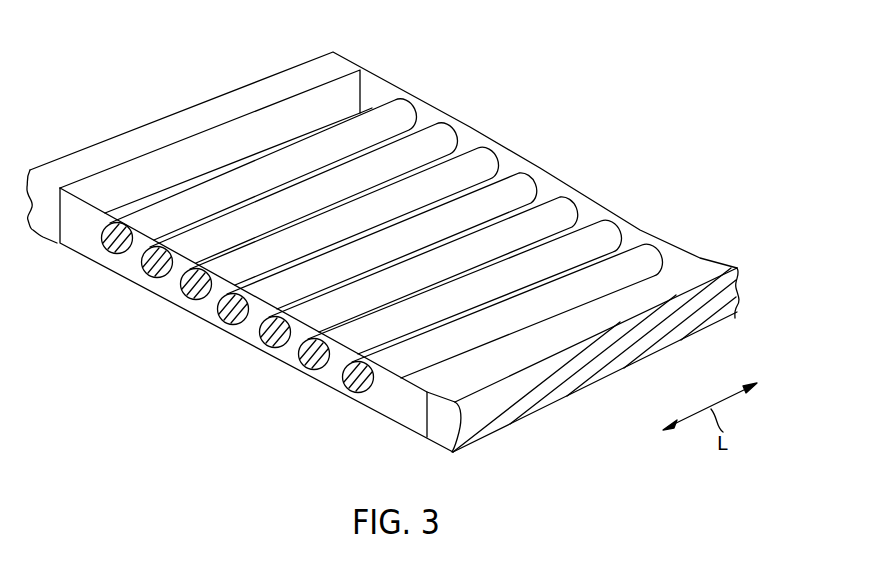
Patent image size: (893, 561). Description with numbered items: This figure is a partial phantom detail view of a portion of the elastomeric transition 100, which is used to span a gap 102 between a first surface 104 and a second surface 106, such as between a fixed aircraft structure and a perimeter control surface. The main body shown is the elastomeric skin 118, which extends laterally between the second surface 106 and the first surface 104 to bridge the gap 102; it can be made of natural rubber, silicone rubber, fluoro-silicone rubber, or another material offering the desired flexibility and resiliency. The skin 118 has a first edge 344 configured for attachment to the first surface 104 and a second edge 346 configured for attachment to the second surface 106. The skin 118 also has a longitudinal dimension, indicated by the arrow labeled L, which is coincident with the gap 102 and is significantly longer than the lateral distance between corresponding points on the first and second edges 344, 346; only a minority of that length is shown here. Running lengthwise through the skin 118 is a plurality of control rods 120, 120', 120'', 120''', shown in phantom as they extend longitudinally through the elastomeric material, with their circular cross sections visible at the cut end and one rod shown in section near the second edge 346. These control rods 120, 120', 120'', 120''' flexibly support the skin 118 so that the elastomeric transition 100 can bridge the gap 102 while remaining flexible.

The elastomeric transition 100 is at (437, 101).
The gap 102 is at (585, 161).
The first surface 104 is at (327, 66).
The second surface 106 is at (739, 264).
The elastomeric skin 118 is at (642, 246).
The control rod 120 is at (370, 242).
The control rod 120' is at (109, 266).
The control rod 120'' is at (226, 329).
The control rod 120''' is at (481, 401).
The first edge 344 is at (230, 119).
The second edge 346 is at (650, 283).